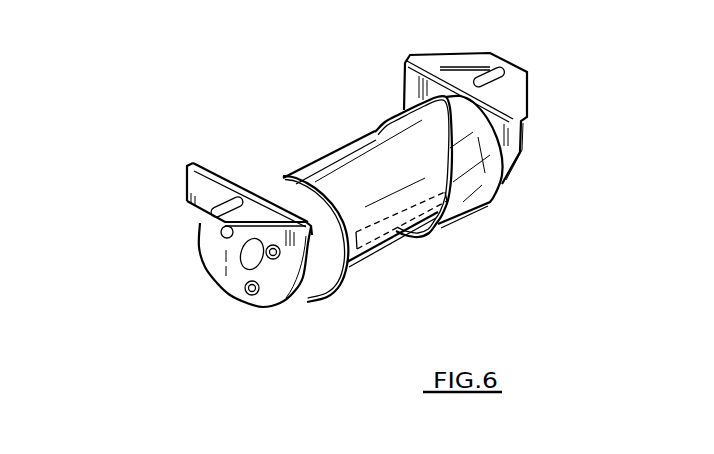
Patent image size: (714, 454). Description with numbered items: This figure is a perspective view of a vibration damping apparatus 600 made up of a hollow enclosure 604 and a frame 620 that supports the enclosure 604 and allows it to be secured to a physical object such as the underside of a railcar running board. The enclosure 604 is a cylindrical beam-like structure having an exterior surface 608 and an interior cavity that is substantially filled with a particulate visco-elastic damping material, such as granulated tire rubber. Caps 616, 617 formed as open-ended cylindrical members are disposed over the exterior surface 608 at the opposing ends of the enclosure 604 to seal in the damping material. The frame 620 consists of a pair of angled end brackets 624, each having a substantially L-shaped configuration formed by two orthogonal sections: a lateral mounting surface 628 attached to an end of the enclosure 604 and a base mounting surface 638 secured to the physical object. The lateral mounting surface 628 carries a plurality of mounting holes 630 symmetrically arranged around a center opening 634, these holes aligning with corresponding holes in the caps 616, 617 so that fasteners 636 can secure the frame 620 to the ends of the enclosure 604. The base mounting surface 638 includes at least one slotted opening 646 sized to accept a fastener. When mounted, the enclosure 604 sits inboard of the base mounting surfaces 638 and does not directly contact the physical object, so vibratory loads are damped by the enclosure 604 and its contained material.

The damping apparatus 600 is at (197, 66).
The hollow enclosure 604 is at (340, 148).
The exterior surface 608 is at (396, 240).
The cap 616 is at (313, 292).
The cap 617 is at (490, 200).
The frame 620 is at (152, 153).
The end bracket 624 is at (188, 201).
The lateral mounting surface 628 is at (225, 257).
The mounting holes 630 is at (264, 300).
The center opening 634 is at (248, 249).
The fasteners 636 is at (247, 296).
The base mounting surface 638 is at (203, 183).
The slotted opening 646 is at (231, 198).